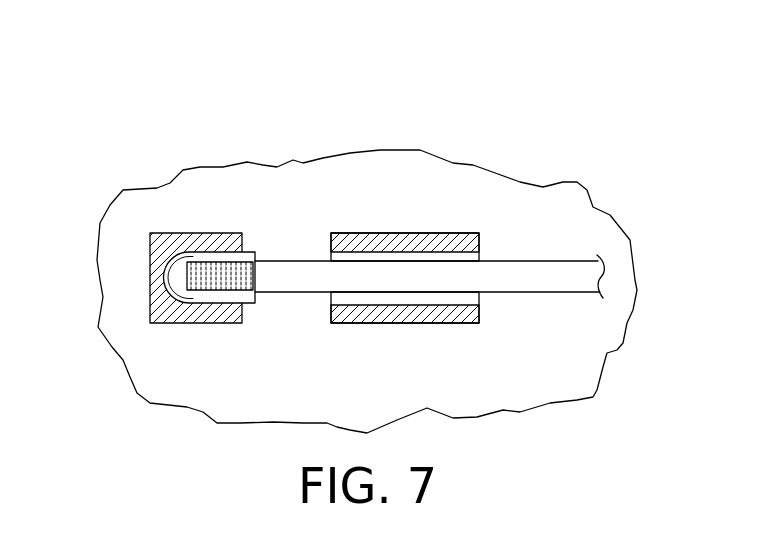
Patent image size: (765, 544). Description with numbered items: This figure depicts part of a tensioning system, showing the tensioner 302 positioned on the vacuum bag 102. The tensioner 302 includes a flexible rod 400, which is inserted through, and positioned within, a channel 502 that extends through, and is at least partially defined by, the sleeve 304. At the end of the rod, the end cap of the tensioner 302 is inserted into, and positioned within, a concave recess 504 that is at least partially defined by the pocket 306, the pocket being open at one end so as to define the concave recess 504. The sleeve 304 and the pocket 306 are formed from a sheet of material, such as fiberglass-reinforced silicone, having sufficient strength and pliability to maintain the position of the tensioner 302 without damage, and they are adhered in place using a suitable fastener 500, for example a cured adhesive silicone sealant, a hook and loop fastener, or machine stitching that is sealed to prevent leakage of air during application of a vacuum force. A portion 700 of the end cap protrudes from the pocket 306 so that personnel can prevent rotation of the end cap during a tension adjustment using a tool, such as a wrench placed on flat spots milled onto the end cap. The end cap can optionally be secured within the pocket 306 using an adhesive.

The vacuum bag 102 is at (125, 352).
The tensioner 302 is at (316, 190).
The sleeve 304 is at (418, 233).
The pocket 306 is at (193, 293).
The flexible rod 400 is at (523, 262).
The fastener 500 is at (477, 313).
The channel 502 is at (371, 336).
The concave recess 504 is at (223, 252).
The portion of the end cap 700 is at (263, 305).